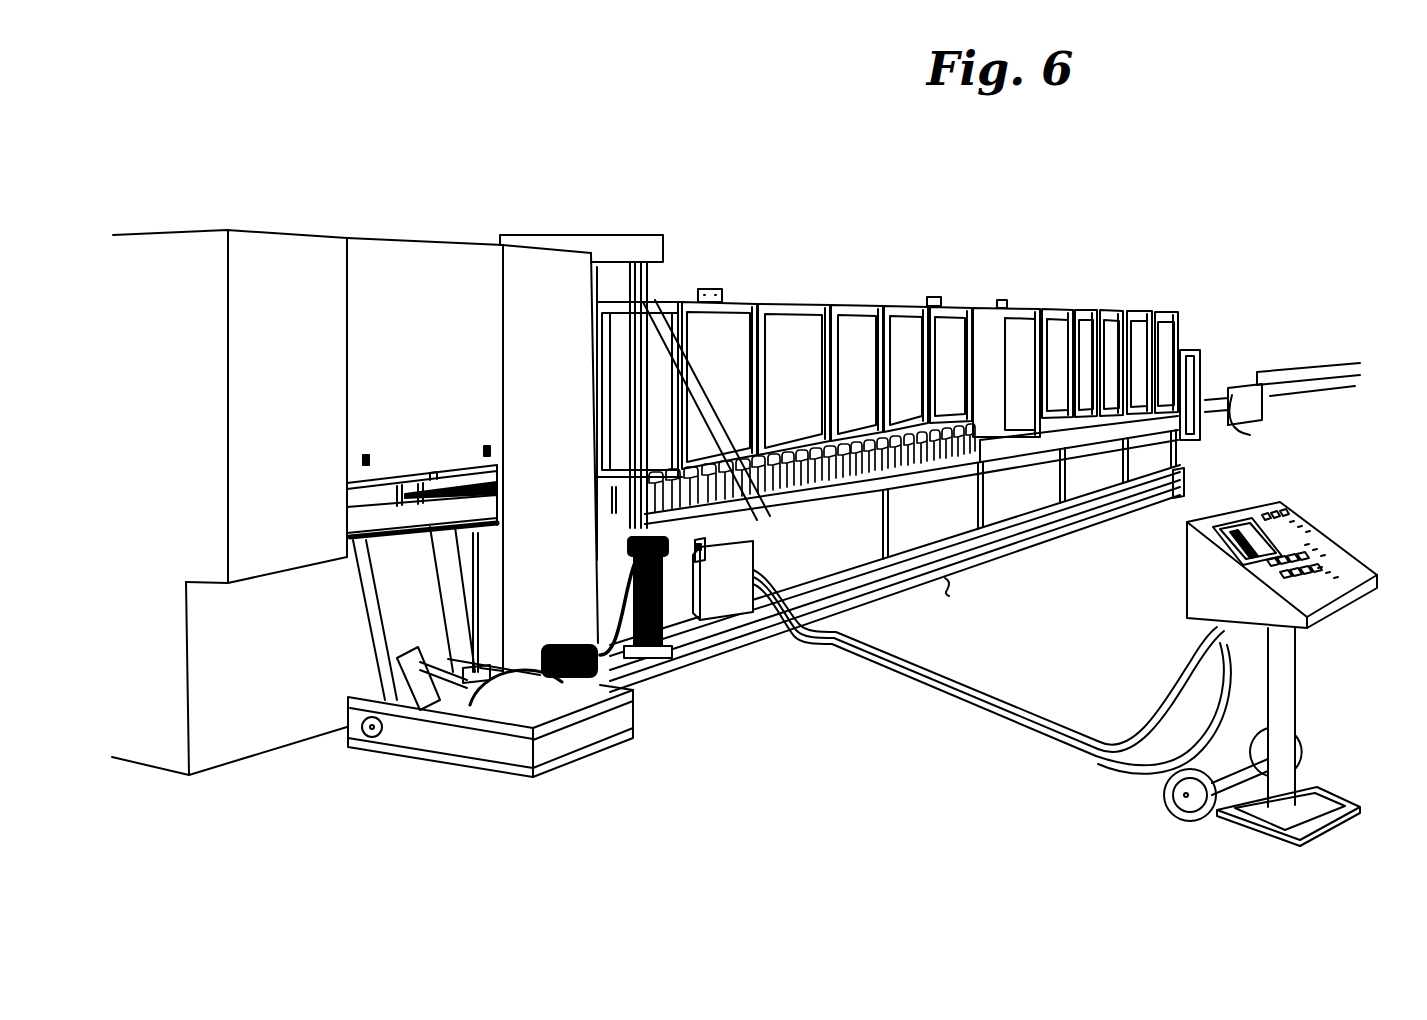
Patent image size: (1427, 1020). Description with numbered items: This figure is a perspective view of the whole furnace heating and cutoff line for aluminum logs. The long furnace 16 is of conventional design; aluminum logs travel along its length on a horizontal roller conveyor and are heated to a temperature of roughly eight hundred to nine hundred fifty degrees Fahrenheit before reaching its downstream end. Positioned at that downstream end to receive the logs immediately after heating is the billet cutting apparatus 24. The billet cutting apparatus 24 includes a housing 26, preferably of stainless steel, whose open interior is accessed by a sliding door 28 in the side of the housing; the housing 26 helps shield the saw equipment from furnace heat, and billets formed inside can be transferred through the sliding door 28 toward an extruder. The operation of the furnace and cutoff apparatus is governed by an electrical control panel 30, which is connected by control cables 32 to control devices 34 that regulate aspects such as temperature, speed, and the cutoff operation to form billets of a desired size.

The furnace 16 is at (1018, 458).
The billet cutting apparatus 24 is at (385, 262).
The housing 26 is at (183, 287).
The sliding door 28 is at (478, 409).
The electrical control panel 30 is at (1321, 527).
The control cables 32 is at (913, 657).
The control devices 34 is at (731, 597).